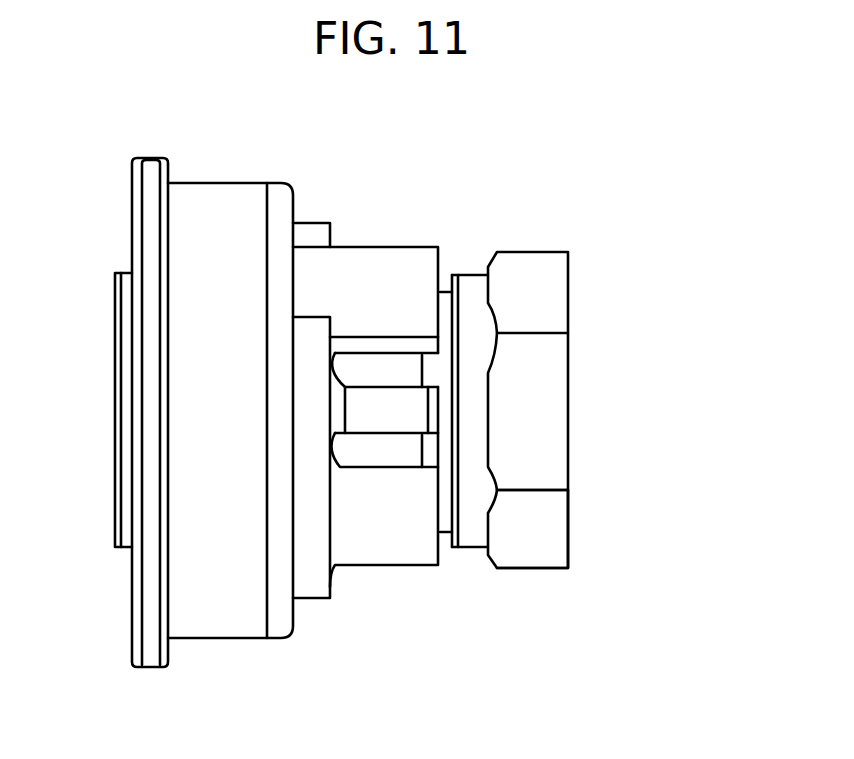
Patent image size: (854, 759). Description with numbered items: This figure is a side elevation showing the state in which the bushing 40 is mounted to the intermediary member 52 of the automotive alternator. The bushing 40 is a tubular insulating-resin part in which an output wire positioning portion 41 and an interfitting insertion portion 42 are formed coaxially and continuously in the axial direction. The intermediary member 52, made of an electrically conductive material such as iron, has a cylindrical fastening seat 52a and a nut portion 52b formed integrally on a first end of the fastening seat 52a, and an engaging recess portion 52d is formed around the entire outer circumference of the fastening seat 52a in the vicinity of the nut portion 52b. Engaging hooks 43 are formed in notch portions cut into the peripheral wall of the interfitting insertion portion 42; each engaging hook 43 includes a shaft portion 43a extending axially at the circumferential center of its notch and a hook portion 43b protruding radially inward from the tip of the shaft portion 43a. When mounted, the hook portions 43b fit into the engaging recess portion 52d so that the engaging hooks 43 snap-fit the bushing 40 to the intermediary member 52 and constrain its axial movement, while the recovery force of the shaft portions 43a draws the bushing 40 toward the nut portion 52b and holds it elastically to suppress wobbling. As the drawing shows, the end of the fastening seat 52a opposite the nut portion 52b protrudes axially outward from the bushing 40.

The bushing 40 is at (340, 115).
The output wire positioning portion 41 is at (234, 178).
The interfitting insertion portion 42 is at (339, 232).
The engaging hooks 43 is at (488, 644).
The shaft portion 43a is at (385, 422).
The hook portion 43b is at (440, 418).
The intermediary member 52 is at (549, 249).
The fastening seat 52a is at (127, 528).
The nut portion 52b is at (537, 547).
The engaging recess portion 52d is at (447, 290).